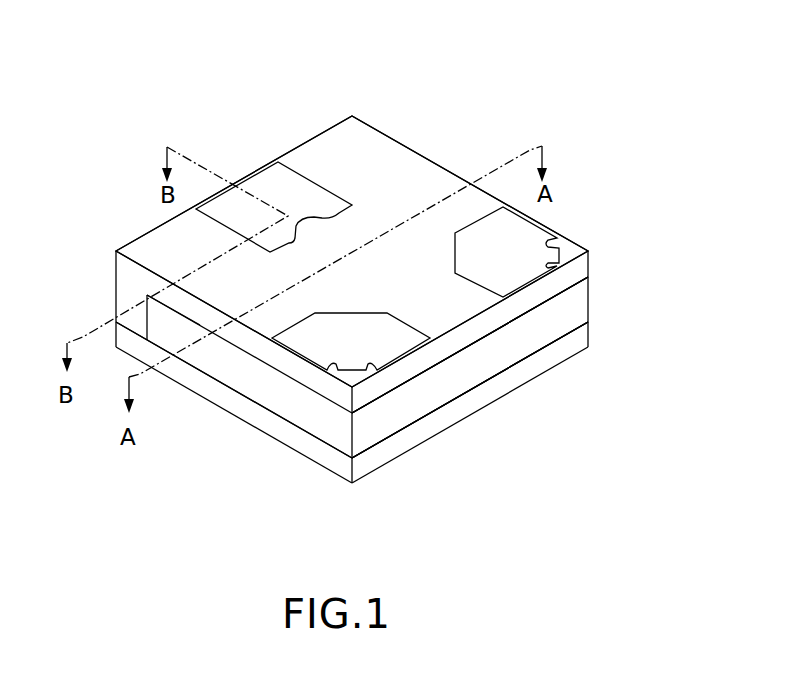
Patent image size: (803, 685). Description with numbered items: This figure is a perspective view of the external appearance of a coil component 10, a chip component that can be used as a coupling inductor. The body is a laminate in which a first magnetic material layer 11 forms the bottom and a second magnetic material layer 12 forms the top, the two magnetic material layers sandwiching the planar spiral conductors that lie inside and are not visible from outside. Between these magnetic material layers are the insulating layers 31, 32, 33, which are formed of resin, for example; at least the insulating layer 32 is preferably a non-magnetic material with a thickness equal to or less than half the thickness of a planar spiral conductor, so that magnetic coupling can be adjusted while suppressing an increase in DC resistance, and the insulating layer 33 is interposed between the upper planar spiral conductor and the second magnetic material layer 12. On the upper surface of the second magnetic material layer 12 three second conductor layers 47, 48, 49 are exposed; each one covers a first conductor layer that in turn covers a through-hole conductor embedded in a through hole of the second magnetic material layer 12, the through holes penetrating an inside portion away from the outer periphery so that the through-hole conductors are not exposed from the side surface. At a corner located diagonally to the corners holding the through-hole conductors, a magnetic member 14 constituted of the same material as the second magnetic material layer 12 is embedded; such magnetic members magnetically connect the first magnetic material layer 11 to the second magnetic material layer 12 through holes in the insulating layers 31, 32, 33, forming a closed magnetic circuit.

The coil component 10 is at (546, 54).
The first magnetic material layer 11 is at (245, 408).
The second magnetic material layer 12 is at (337, 152).
The magnetic member 14 is at (128, 292).
The insulating layer 31 is at (507, 357).
The insulating layer 32 is at (470, 367).
The insulating layer 33 is at (470, 367).
The second conductor layer 47 is at (527, 250).
The second conductor layer 48 is at (387, 357).
The second conductor layer 49 is at (272, 182).